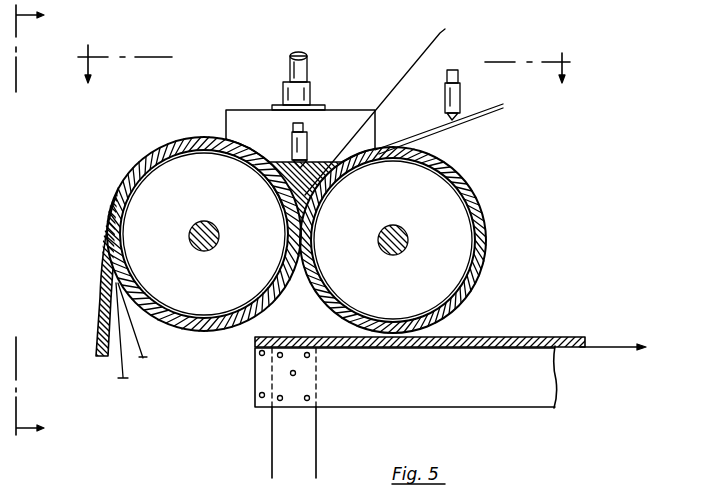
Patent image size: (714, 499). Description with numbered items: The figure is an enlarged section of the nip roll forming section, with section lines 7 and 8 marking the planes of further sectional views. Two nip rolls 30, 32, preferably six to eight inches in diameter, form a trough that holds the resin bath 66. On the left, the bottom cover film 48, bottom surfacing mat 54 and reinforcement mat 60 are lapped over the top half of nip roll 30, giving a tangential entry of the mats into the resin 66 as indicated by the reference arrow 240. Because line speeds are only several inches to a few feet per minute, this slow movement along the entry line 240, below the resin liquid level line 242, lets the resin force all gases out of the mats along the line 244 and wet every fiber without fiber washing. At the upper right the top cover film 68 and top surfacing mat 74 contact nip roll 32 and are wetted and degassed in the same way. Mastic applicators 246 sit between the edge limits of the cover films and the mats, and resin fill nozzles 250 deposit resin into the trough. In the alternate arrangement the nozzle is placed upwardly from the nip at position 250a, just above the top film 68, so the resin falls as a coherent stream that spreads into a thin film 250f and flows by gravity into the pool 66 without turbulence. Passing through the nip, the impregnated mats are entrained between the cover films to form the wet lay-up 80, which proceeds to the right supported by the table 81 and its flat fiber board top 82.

The section line 7- 7 is at (324, 78).
The section line 8- 8 is at (40, 220).
The nip roll 30 is at (232, 333).
The nip roll 32 is at (481, 175).
The bottom cover film 48 is at (143, 356).
The bottom surfacing mat 54 is at (123, 377).
The reinforcement mat 60 is at (95, 333).
The resin bath 66 is at (280, 160).
The top cover film 68 is at (499, 136).
The top surfacing mat 74 is at (427, 55).
The wet lay-up 80 is at (568, 335).
The table 81 is at (250, 406).
The flat top 82 is at (340, 349).
The reference arrow 240 is at (192, 131).
The resin liquid level line 242 is at (280, 154).
The line 244 is at (213, 130).
The mastic applicator 246 is at (333, 97).
The resin fill nozzle 250 is at (307, 140).
The alternate nozzle position 250a is at (462, 100).
The thin film 250f is at (440, 118).